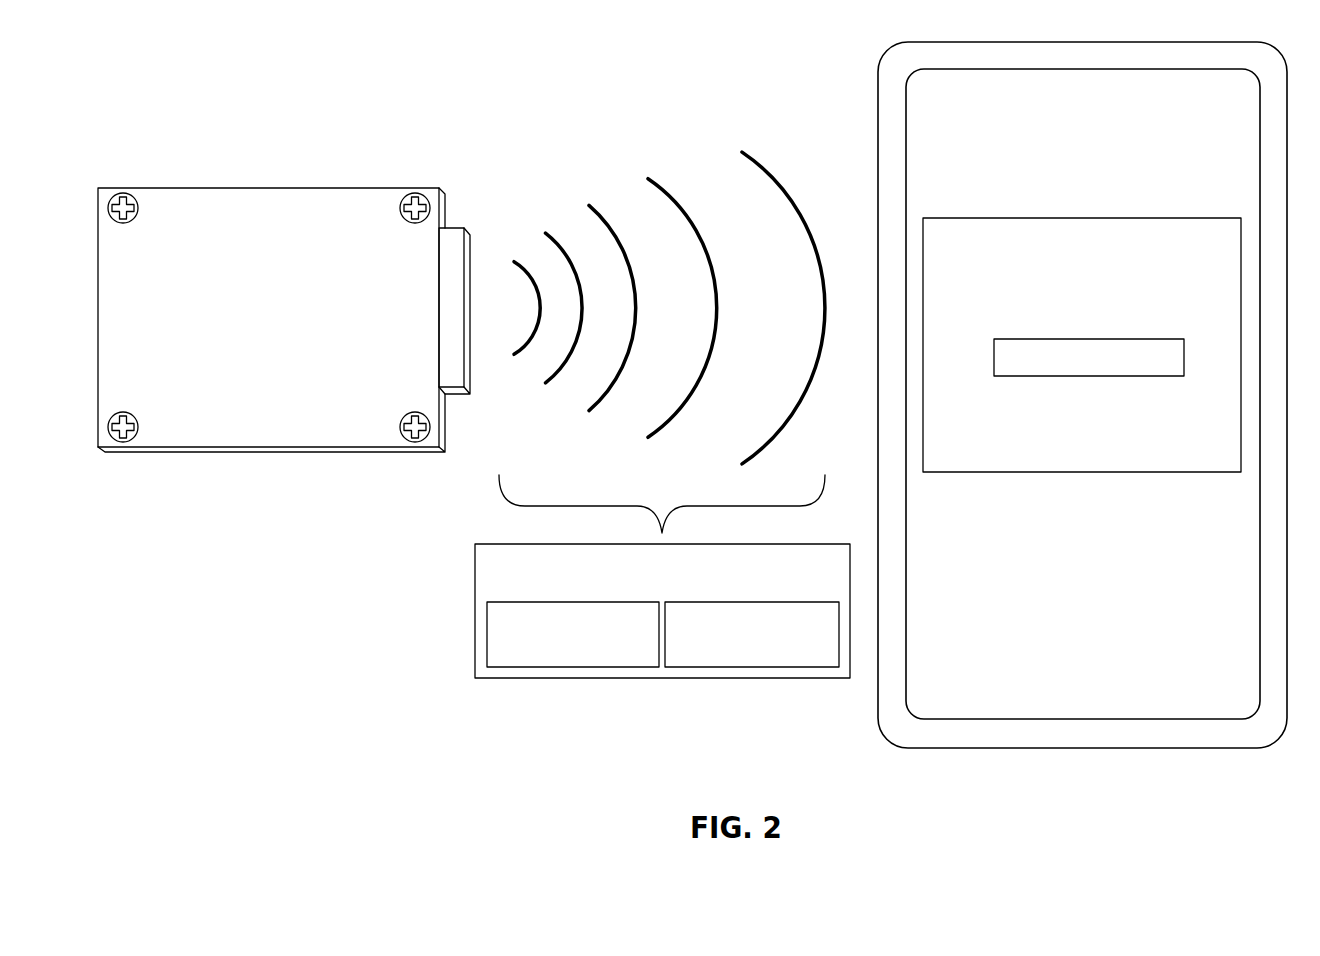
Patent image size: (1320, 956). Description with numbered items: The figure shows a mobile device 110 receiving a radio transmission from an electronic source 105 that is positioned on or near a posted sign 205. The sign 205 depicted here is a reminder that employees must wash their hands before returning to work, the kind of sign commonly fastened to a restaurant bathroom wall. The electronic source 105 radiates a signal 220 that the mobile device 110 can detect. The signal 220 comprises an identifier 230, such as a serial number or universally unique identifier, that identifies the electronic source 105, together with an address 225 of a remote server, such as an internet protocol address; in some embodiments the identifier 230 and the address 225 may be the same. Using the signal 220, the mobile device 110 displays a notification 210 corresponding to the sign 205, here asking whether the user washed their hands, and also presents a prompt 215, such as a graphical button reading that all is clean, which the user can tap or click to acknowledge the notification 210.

The electronic source 105 is at (470, 261).
The mobile device 110 is at (878, 126).
The sign 205 is at (207, 188).
The notification 210 is at (1155, 218).
The prompt 215 is at (1032, 339).
The signal 220 is at (645, 592).
The address 225 is at (556, 655).
The identifier 230 is at (736, 655).